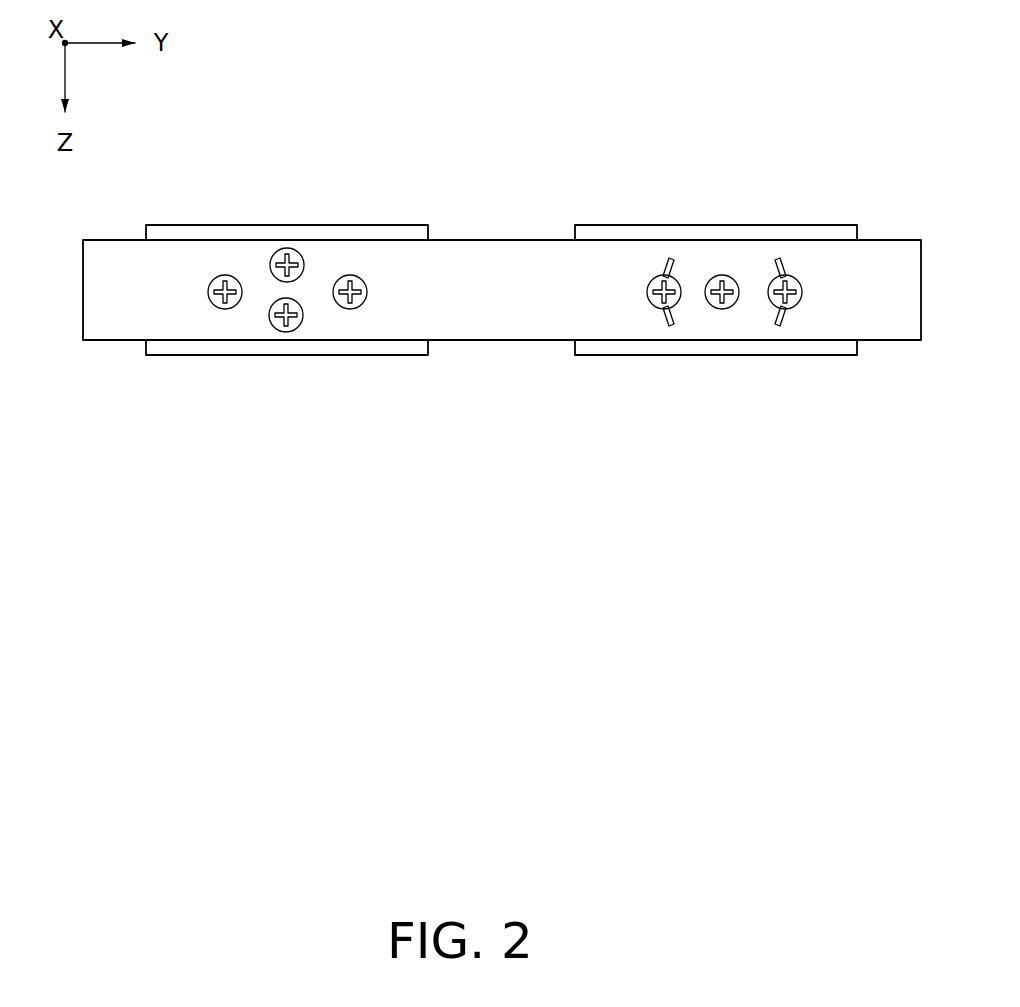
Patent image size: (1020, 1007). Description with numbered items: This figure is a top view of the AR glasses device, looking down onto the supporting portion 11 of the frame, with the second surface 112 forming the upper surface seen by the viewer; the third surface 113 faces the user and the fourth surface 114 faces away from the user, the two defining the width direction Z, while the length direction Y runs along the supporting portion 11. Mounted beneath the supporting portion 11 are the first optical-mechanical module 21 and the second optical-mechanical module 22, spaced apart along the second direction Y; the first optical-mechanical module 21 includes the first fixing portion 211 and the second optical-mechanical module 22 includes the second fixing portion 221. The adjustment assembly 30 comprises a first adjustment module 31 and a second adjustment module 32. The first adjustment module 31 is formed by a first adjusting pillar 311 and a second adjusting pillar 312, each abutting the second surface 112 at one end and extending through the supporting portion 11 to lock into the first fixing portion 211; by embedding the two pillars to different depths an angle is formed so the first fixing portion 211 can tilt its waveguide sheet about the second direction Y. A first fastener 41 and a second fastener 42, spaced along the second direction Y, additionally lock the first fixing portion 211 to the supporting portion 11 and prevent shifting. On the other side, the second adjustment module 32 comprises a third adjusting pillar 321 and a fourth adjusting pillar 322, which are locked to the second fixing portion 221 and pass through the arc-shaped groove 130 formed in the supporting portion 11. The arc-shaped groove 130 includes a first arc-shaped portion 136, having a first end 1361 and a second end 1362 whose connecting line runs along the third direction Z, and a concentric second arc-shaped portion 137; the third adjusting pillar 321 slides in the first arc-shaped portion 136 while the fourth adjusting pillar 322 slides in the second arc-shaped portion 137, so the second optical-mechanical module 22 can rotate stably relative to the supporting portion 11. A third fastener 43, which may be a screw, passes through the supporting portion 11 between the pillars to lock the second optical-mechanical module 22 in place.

The supporting portion 11 is at (105, 253).
The second surface 112 is at (413, 341).
The third surface 113 is at (120, 240).
The fourth surface 114 is at (120, 340).
The arc-shaped groove 130 is at (847, 373).
The first arc-shaped portion 136 is at (581, 348).
The first end 1361 is at (661, 259).
The second end 1362 is at (668, 331).
The second arc-shaped portion 137 is at (780, 323).
The first optical-mechanical module 21 is at (240, 370).
The first fixing portion 211 is at (280, 356).
The second optical-mechanical module 22 is at (767, 372).
The second fixing portion 221 is at (702, 355).
The adjustment assembly 30 is at (529, 213).
The first adjustment module 31 is at (315, 231).
The first adjusting pillar 311 is at (289, 257).
The second adjusting pillar 312 is at (290, 312).
The second adjustment module 32 is at (724, 218).
The third adjusting pillar 321 is at (672, 276).
The fourth adjusting pillar 322 is at (760, 236).
The first fastener 41 is at (208, 293).
The second fastener 42 is at (346, 306).
The third fastener 43 is at (722, 310).